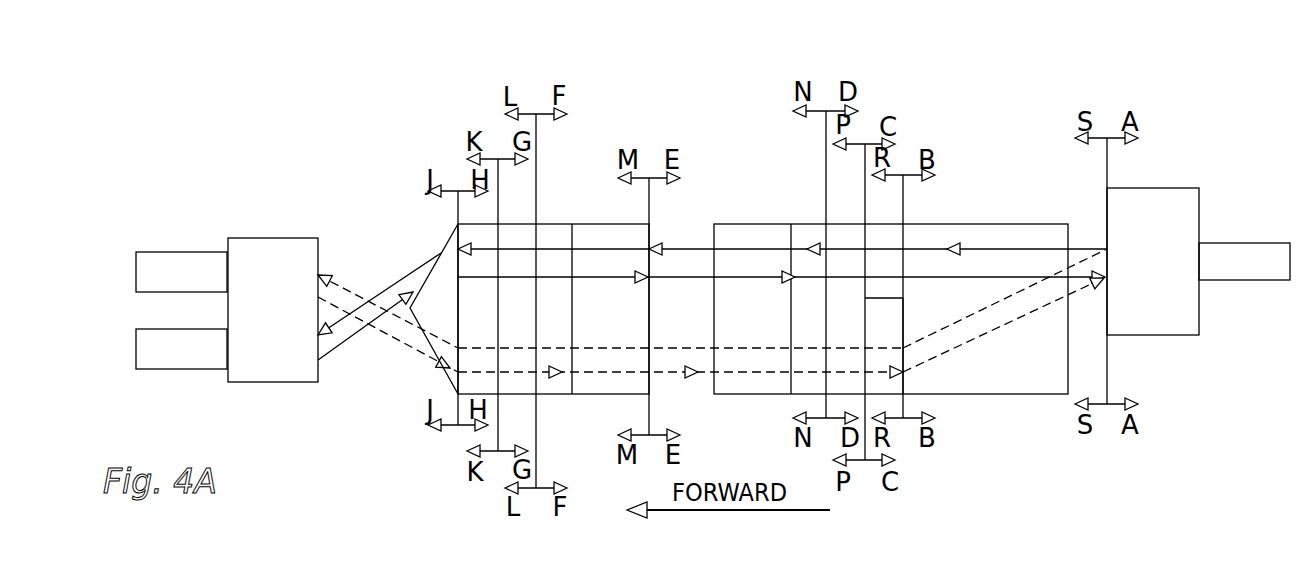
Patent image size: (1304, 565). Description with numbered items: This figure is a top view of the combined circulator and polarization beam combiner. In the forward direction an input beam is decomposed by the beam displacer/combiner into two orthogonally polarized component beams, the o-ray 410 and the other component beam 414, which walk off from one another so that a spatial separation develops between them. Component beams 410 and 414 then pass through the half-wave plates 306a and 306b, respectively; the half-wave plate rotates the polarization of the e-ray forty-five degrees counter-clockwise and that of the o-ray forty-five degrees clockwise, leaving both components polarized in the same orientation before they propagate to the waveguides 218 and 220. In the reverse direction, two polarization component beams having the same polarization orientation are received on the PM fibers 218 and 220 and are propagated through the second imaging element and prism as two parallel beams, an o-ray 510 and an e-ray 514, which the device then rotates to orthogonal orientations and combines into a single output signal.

The waveguide 218 is at (160, 252).
The waveguide 220 is at (166, 369).
The o-ray 510 is at (337, 360).
The e-ray 514 is at (405, 340).
The half-wave plate 306a is at (905, 235).
The half-wave plate 306b is at (905, 323).
The o-ray 410 is at (1008, 247).
The component beam 414 is at (988, 332).